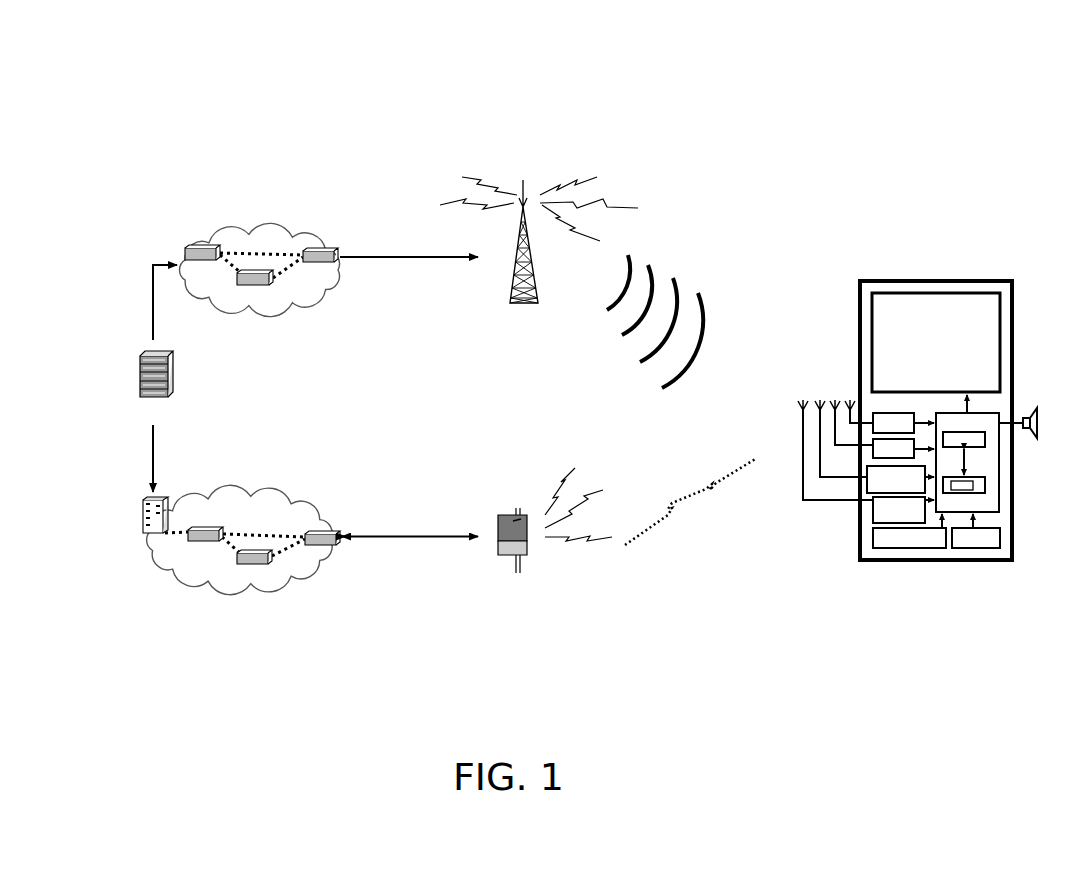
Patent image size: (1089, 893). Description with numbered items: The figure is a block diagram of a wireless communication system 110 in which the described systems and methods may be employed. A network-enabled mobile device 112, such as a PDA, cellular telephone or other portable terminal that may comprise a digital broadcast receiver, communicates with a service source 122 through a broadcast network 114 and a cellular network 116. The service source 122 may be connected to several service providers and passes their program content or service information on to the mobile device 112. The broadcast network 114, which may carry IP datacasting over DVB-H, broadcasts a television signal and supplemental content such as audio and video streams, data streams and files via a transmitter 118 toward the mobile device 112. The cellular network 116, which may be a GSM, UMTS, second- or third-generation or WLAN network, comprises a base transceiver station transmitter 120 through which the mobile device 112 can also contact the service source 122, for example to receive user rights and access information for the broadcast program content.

The wireless communication system 110 is at (512, 90).
The mobile device 112 is at (905, 560).
The broadcast network 114 is at (360, 282).
The cellular network 116 is at (403, 583).
The transmitter 118 is at (587, 247).
The base transceiver station transmitter 120 is at (580, 583).
The service source 122 is at (163, 392).